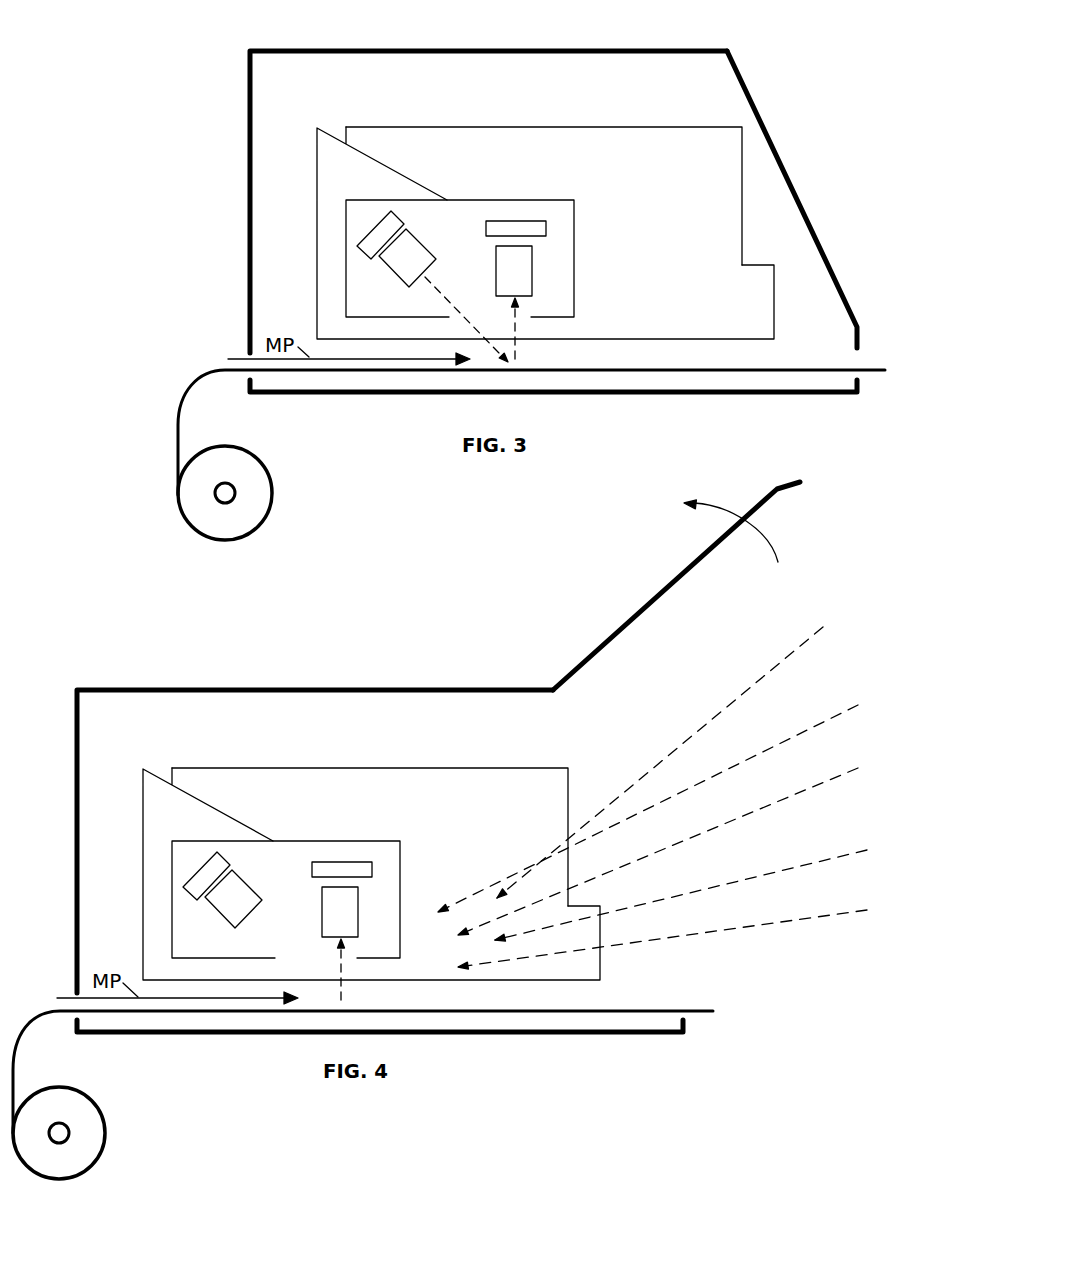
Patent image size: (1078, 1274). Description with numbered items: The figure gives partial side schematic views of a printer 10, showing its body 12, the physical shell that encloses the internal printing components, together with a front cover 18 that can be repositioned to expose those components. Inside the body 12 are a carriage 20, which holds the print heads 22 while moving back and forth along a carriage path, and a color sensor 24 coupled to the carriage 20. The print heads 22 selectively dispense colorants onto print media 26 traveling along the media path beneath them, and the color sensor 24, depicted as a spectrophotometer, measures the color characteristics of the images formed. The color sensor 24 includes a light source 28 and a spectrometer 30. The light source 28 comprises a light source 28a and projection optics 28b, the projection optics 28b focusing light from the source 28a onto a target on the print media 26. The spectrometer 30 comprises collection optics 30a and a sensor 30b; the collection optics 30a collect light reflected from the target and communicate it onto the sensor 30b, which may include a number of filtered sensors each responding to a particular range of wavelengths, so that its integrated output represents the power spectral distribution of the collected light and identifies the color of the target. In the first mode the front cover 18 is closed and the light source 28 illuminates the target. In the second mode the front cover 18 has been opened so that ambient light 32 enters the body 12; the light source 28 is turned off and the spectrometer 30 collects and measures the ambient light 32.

In FIG. 3, the printer 10 is at (541, 201).
In FIG. 4, the printer 10 is at (426, 757).
In FIG. 3, the body 12 is at (278, 49).
In FIG. 4, the body 12 is at (102, 689).
In FIG. 3, the front cover 18 is at (782, 162).
In FIG. 4, the front cover 18 is at (711, 552).
In FIG. 3, the carriage 20 is at (545, 233).
In FIG. 4, the carriage 20 is at (176, 826).
In FIG. 3, the print heads 22 is at (544, 196).
In FIG. 4, the print heads 22 is at (536, 804).
In FIG. 3, the color sensor 24 is at (474, 240).
In FIG. 4, the color sensor 24 is at (370, 841).
In FIG. 3, the print media 26 is at (222, 368).
In FIG. 4, the print media 26 is at (65, 1017).
In FIG. 3, the light source 28 is at (367, 255).
In FIG. 4, the light source 28 is at (193, 896).
In FIG. 3, the light source 28a is at (406, 235).
In FIG. 4, the light source 28a is at (222, 855).
In FIG. 3, the projection optics 28b is at (393, 267).
In FIG. 4, the projection optics 28b is at (226, 921).
In FIG. 3, the spectrometer 30 is at (537, 278).
In FIG. 4, the spectrometer 30 is at (363, 919).
In FIG. 3, the collection optics 30a is at (535, 276).
In FIG. 4, the collection optics 30a is at (359, 910).
In FIG. 3, the sensor 30b is at (496, 217).
In FIG. 4, the sensor 30b is at (326, 862).
In FIG. 4, the ambient light 32 is at (764, 804).